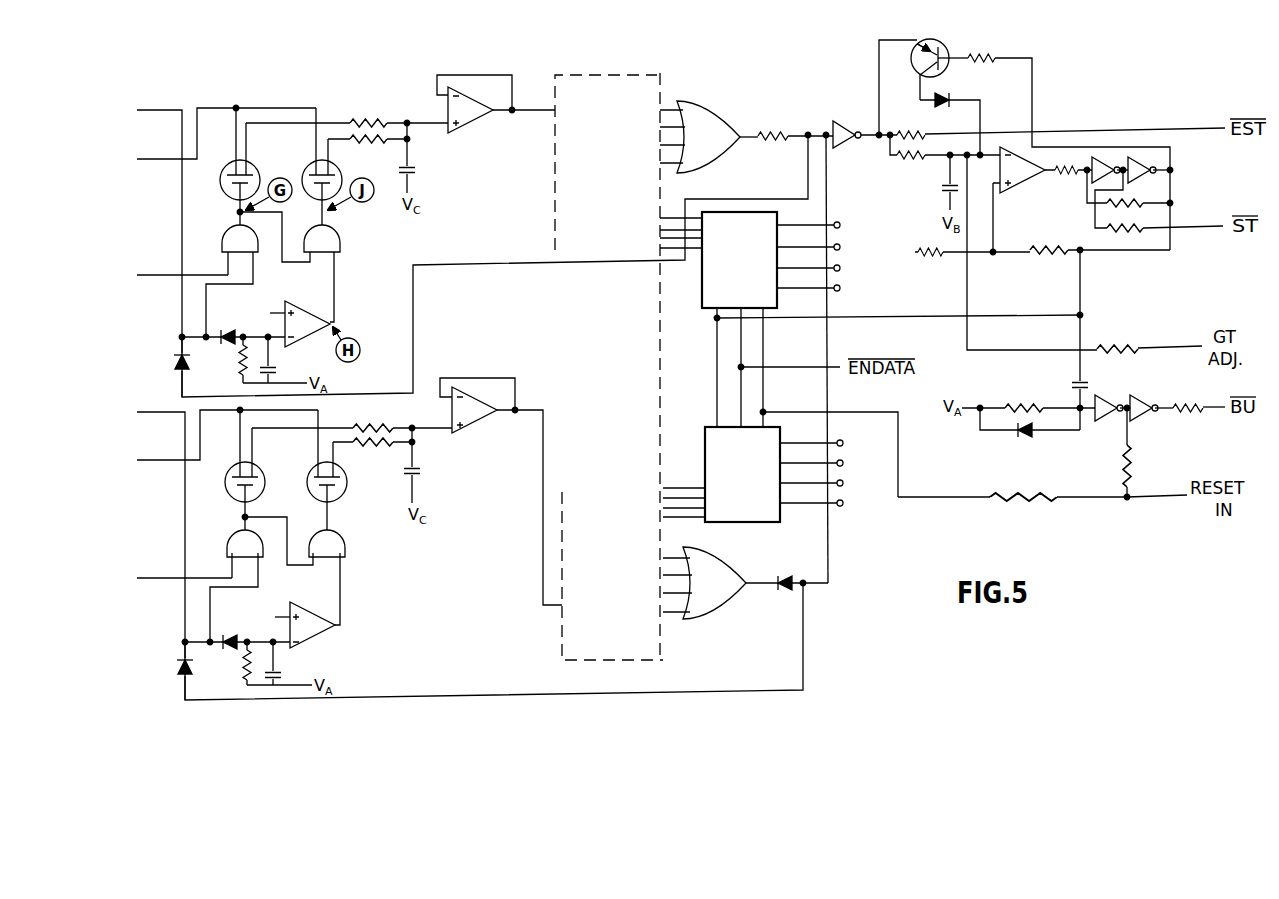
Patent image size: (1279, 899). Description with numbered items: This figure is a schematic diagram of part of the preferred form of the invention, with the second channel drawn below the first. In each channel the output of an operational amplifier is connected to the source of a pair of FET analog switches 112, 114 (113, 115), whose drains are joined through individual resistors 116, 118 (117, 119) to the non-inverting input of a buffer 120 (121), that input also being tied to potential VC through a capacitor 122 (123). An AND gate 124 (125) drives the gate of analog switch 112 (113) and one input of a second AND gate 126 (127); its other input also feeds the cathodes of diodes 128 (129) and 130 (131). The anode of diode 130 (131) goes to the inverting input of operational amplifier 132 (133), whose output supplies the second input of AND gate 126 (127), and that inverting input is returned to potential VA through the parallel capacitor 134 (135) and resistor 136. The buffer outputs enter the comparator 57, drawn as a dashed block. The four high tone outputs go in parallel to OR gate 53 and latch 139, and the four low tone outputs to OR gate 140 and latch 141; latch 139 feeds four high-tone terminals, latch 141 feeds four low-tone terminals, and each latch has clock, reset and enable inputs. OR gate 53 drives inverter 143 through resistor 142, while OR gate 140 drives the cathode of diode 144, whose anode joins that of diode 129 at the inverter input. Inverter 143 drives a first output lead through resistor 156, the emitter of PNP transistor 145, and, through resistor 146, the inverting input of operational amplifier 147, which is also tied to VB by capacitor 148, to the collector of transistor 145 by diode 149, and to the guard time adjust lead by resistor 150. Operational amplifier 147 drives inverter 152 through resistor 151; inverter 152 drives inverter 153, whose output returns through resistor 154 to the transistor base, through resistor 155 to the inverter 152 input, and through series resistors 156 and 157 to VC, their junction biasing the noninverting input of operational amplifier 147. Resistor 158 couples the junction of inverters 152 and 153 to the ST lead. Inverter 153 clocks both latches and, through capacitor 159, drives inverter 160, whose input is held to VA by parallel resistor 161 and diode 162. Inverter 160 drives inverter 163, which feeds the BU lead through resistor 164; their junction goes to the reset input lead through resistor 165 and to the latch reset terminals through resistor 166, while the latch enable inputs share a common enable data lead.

The OR gate 53 is at (692, 100).
The comparator 57 is at (610, 74).
The FET analog switch 112 is at (224, 190).
The FET analog switch 113 is at (228, 495).
The FET analog switch 114 is at (308, 165).
The FET analog switch 115 is at (313, 466).
The resistor 116 is at (378, 118).
The resistor 117 is at (376, 423).
The resistor 118 is at (362, 145).
The resistor 119 is at (384, 448).
The buffer 120 is at (478, 124).
The buffer 121 is at (474, 427).
The capacitor 122 is at (412, 166).
The capacitor 123 is at (418, 463).
The AND gate 124 is at (222, 238).
The AND gate 125 is at (224, 548).
The AND gate 126 is at (340, 240).
The AND gate 127 is at (345, 548).
The diode 128 is at (176, 365).
The diode 129 is at (178, 670).
The diode 130 is at (222, 346).
The diode 131 is at (230, 652).
The operational amplifier 132 is at (312, 312).
The operational amplifier 133 is at (303, 613).
The capacitor 134 is at (278, 371).
The capacitor 135 is at (280, 676).
The resistor 136 is at (238, 372).
The latch 139 is at (700, 290).
The OR gate 140 is at (730, 608).
The latch 141 is at (703, 440).
The resistor 142 is at (790, 130).
The inverter 143 is at (852, 120).
The diode 144 is at (787, 576).
The PNP transistor 145 is at (946, 50).
The resistor 146 is at (905, 160).
The operational amplifier 147 is at (1026, 190).
The capacitor 148 is at (944, 190).
The diode 149 is at (948, 95).
The resistor 150 is at (1128, 348).
The resistor 151 is at (1066, 178).
The inverter 152 is at (1100, 156).
The inverter 153 is at (1145, 156).
The resistor 154 is at (1000, 58).
The resistor 155 is at (1114, 208).
The resistor 156 is at (918, 130).
The resistor 157 is at (944, 258).
The resistor 158 is at (1128, 234).
The capacitor 159 is at (1078, 382).
The inverter 160 is at (1107, 424).
The resistor 161 is at (1032, 405).
The diode 162 is at (1024, 438).
The inverter 163 is at (1146, 398).
The resistor 164 is at (1182, 414).
The resistor 165 is at (1134, 468).
The resistor 166 is at (1020, 503).